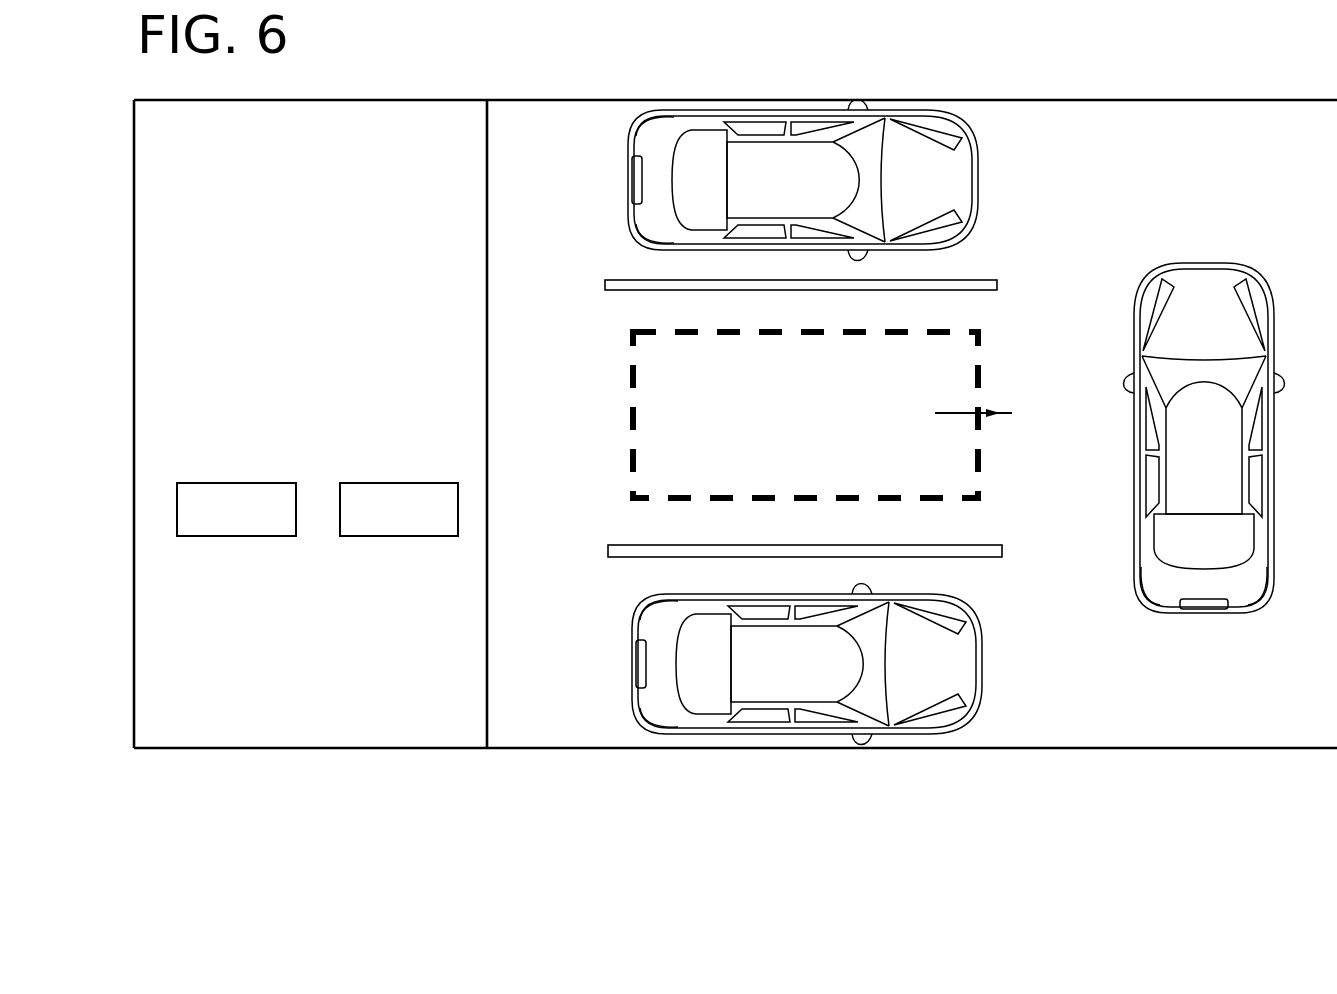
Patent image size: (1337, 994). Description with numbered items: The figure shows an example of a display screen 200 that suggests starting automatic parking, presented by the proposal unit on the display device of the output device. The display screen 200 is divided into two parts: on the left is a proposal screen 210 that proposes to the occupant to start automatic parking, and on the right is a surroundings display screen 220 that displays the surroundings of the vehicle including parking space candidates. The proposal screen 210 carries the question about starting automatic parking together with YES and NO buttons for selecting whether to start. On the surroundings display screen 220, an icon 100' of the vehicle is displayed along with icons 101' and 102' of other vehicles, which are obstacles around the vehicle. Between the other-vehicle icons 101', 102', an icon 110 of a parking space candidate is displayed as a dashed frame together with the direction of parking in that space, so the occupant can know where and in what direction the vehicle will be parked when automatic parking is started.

The display screen 200 is at (475, 828).
The proposal screen 210 is at (306, 585).
The surroundings display screen 220 is at (625, 762).
The icon of a parking space candidate 110 is at (635, 331).
The icon of the vehicle 100' is at (1204, 557).
The icon of other vehicle 101' is at (803, 141).
The icon of other vehicle 102' is at (807, 715).